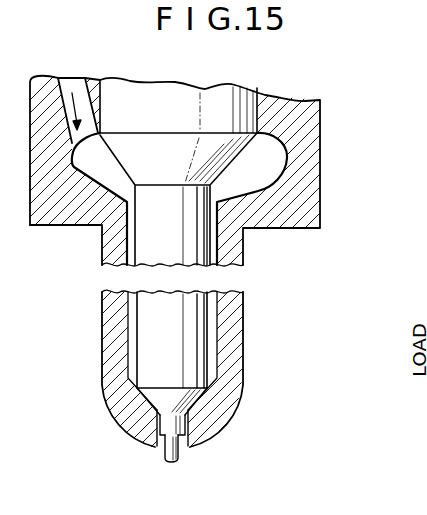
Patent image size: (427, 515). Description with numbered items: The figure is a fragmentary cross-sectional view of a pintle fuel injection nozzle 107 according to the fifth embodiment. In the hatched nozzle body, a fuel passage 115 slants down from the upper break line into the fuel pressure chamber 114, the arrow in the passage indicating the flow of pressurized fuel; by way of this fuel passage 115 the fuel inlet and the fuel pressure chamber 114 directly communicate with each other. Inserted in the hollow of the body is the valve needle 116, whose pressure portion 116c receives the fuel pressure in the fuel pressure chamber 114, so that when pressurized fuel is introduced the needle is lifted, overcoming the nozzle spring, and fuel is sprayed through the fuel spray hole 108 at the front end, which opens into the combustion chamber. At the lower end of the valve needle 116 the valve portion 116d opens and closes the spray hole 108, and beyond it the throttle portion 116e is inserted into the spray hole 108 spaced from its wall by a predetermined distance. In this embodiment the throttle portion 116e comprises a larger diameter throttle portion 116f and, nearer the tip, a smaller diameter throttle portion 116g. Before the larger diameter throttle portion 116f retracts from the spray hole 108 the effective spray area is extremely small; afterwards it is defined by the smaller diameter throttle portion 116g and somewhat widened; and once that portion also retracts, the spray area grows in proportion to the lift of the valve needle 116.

The pintle fuel injection nozzle 107 is at (322, 105).
The fuel passage 115 is at (82, 83).
The fuel pressure chamber 114 is at (253, 170).
The pressure portion 116c is at (236, 148).
The valve needle 116 is at (199, 291).
The valve portion 116d is at (147, 397).
The throttle portion 116e is at (263, 458).
The larger diameter throttle portion 116f is at (186, 427).
The smaller diameter throttle portion 116g is at (183, 452).
The fuel spray hole 108 is at (157, 447).